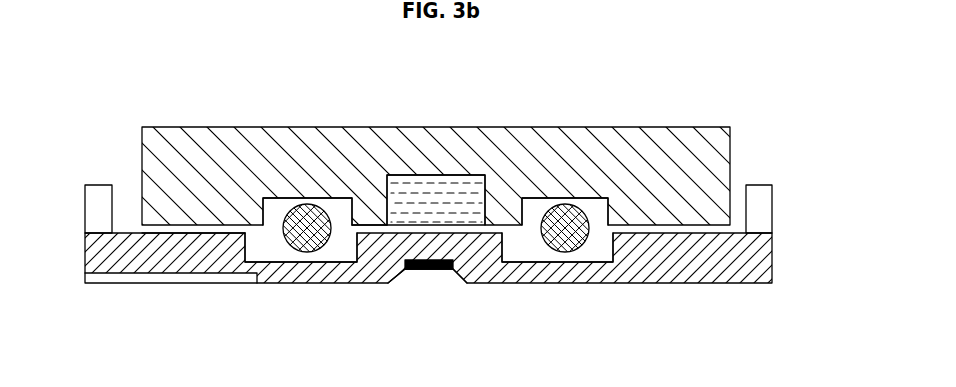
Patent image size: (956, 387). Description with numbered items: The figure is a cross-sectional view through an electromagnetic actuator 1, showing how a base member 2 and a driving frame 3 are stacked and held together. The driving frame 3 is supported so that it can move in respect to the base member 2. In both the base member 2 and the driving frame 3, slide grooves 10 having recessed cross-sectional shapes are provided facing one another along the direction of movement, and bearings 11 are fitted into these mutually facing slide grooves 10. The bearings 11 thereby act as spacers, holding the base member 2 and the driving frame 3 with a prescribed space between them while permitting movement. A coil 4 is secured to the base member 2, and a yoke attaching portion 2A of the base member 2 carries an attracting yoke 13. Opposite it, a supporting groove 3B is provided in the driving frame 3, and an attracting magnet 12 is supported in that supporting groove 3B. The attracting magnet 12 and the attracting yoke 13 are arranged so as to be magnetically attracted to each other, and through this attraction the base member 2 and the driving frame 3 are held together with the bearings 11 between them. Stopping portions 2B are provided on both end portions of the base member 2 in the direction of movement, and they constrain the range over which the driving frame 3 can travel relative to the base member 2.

The electromagnetic actuator 1 is at (763, 89).
The base member 2 is at (772, 265).
The yoke attaching portion 2A is at (408, 280).
The stopping portion 2B is at (100, 185).
The driving frame 3 is at (662, 127).
The supporting groove 3B is at (408, 188).
The coil 4 is at (183, 232).
The slide groove 10 is at (264, 206).
The bearing 11 is at (318, 250).
The attracting magnet 12 is at (447, 174).
The attracting yoke 13 is at (435, 269).